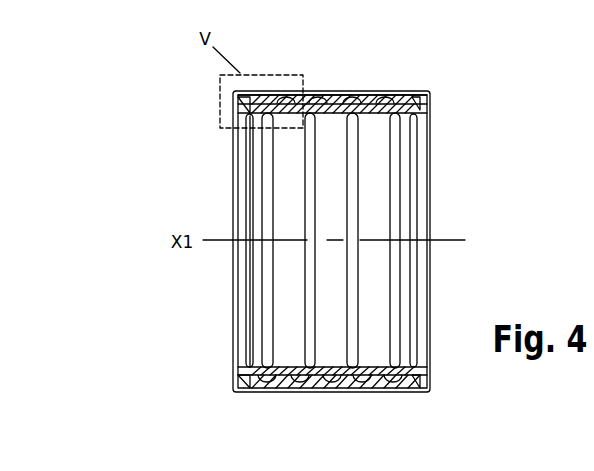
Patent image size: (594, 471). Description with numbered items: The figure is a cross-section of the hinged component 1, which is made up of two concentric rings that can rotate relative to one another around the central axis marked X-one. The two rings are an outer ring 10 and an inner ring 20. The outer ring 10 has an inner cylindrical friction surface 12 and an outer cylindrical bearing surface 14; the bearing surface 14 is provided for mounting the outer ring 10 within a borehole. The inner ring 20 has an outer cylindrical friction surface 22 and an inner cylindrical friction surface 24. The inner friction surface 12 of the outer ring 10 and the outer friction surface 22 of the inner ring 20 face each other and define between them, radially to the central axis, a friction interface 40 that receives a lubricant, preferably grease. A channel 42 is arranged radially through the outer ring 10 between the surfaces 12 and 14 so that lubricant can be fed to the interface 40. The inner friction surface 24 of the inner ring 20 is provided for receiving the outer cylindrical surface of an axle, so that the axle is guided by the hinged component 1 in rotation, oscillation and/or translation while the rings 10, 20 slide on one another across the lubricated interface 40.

The hinged component 1 is at (182, 93).
The outer ring 10 is at (425, 92).
The inner cylindrical friction surface 12 is at (327, 115).
The outer cylindrical bearing surface 14 is at (370, 89).
The inner ring 20 is at (406, 127).
The outer cylindrical friction surface 22 is at (398, 95).
The inner cylindrical friction surface 24 is at (370, 118).
The friction interface 40 is at (272, 93).
The channel 42 is at (325, 90).